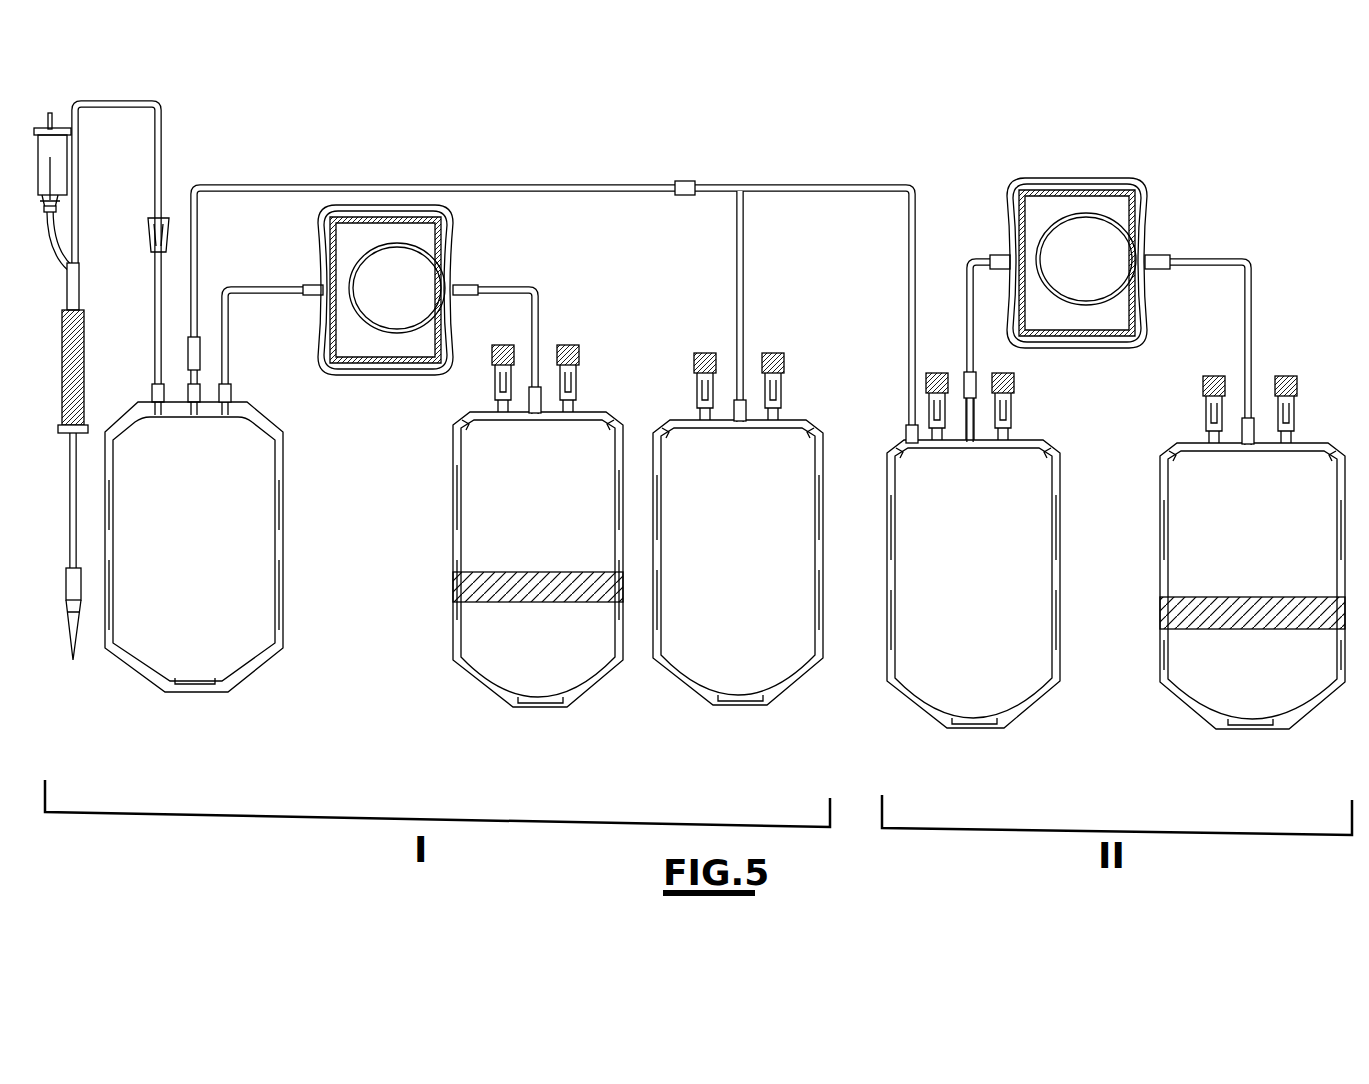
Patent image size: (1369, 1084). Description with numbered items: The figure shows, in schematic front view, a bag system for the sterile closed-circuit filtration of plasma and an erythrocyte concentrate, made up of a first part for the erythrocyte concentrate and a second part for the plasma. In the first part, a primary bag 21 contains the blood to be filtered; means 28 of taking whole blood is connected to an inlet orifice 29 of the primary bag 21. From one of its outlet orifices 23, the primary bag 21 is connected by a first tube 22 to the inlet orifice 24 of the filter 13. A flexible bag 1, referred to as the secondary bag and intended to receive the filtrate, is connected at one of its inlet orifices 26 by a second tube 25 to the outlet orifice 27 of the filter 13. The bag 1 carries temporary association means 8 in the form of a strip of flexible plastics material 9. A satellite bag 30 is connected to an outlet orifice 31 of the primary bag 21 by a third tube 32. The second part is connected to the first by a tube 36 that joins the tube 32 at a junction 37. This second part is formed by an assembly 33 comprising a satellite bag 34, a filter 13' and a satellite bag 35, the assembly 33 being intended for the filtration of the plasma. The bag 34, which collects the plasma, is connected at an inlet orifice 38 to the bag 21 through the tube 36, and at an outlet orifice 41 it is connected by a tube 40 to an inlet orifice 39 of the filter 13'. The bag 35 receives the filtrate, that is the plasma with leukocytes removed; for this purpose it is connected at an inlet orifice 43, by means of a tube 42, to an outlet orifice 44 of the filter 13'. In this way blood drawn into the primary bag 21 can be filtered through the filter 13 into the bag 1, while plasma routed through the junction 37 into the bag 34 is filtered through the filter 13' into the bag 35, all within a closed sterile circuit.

The flexible bag 1 is at (510, 502).
The temporary association means 8 is at (861, 609).
The strip of flexible plastics material 9 is at (486, 592).
The filter 13 is at (398, 319).
The filter 13' is at (1084, 241).
The primary bag 21 is at (206, 553).
The first tube 22 is at (275, 287).
The outlet orifice 23 is at (232, 396).
The inlet orifice 24 is at (312, 296).
The second tube 25 is at (544, 293).
The inlet orifice 26 is at (543, 387).
The outlet orifice 27 is at (466, 286).
The means of taking whole blood 28 is at (83, 712).
The inlet orifice 29 is at (152, 392).
The satellite bag 30 is at (722, 658).
The outlet orifice 31 is at (204, 378).
The third tube 32 is at (565, 183).
The assembly 33 is at (1269, 228).
The satellite bag 34 is at (962, 549).
The satellite bag 35 is at (1235, 527).
The tube 36 is at (853, 185).
The junction 37 is at (688, 181).
The inlet orifice 38 is at (906, 432).
The inlet orifice 39 is at (1000, 256).
The tube 40 is at (966, 320).
The outlet orifice 41 is at (977, 384).
The tube 42 is at (1252, 300).
The inlet orifice 43 is at (1250, 418).
The outlet orifice 44 is at (1153, 258).